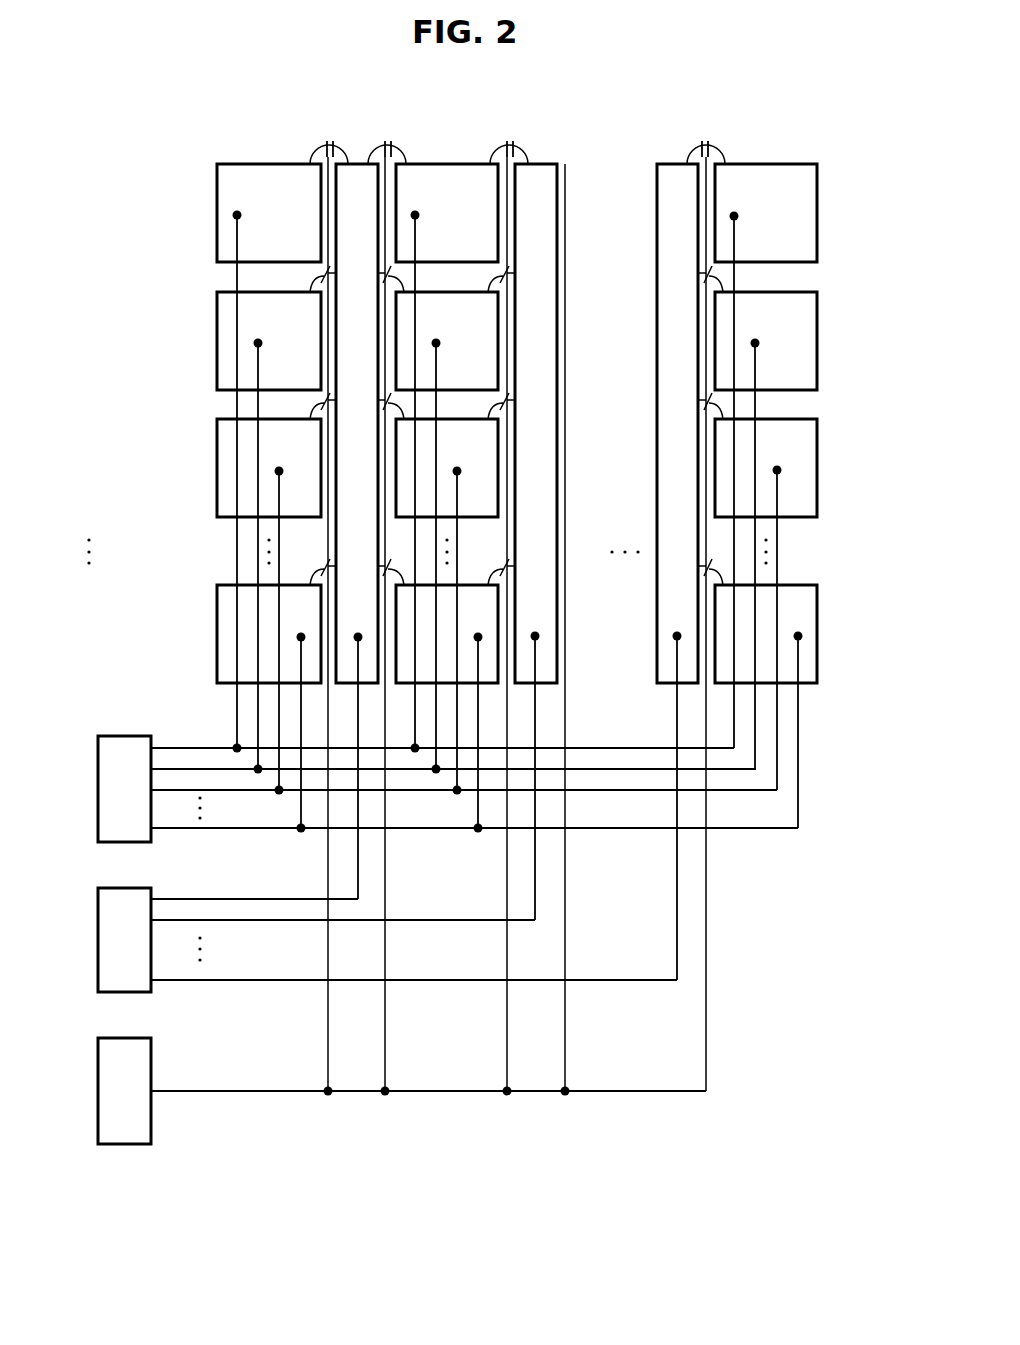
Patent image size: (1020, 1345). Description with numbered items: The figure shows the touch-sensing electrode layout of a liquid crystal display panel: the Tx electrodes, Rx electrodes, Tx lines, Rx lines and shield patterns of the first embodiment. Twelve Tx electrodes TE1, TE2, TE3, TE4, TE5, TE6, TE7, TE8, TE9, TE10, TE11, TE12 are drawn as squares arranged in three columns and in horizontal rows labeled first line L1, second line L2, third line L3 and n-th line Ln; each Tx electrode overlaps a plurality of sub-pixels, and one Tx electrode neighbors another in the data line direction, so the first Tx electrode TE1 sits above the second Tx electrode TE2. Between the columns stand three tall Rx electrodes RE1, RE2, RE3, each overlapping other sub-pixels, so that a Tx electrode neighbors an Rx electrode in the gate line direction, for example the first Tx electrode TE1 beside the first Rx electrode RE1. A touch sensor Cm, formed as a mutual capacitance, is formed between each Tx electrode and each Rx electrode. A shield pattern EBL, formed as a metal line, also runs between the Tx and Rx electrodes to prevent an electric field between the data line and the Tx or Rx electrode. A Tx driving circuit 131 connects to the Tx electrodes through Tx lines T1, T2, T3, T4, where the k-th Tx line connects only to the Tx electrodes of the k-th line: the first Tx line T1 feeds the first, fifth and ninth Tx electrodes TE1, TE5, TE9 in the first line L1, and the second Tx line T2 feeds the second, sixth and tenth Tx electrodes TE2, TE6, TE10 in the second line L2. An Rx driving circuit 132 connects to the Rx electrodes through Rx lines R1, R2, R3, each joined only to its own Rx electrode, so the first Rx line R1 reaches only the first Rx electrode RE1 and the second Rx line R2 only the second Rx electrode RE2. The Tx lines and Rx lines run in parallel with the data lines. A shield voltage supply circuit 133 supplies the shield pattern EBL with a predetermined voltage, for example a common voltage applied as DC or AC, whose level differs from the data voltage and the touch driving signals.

The first Tx electrode TE1 is at (217, 185).
The second Tx electrode TE2 is at (217, 314).
The third Tx electrode TE3 is at (217, 440).
The fourth Tx electrode TE4 is at (217, 606).
The fifth Tx electrode TE5 is at (498, 186).
The sixth Tx electrode TE6 is at (498, 313).
The seventh Tx electrode TE7 is at (498, 440).
The eighth Tx electrode TE8 is at (498, 606).
The ninth Tx electrode TE9 is at (817, 213).
The tenth Tx electrode TE10 is at (817, 338).
The eleventh Tx electrode TE11 is at (817, 466).
The twelfth Tx electrode TE12 is at (817, 633).
The first Rx electrode RE1 is at (362, 163).
The second Rx electrode RE2 is at (537, 163).
The third Rx electrode RE3 is at (678, 163).
The shield pattern EBL is at (318, 153).
The touch sensor Cm is at (508, 605).
The first line L1 is at (92, 215).
The second line L2 is at (92, 339).
The third line L3 is at (92, 466).
The n-th line Ln is at (92, 633).
The first Tx line T1 is at (170, 747).
The second Tx line T2 is at (198, 768).
The third Tx line T3 is at (228, 792).
The fourth Tx line T4 is at (267, 830).
The first Rx line R1 is at (180, 900).
The second Rx line R2 is at (227, 922).
The third Rx line R3 is at (275, 982).
The Tx driving circuit 131 is at (98, 786).
The Rx driving circuit 132 is at (98, 936).
The shield voltage supply circuit 133 is at (98, 1089).